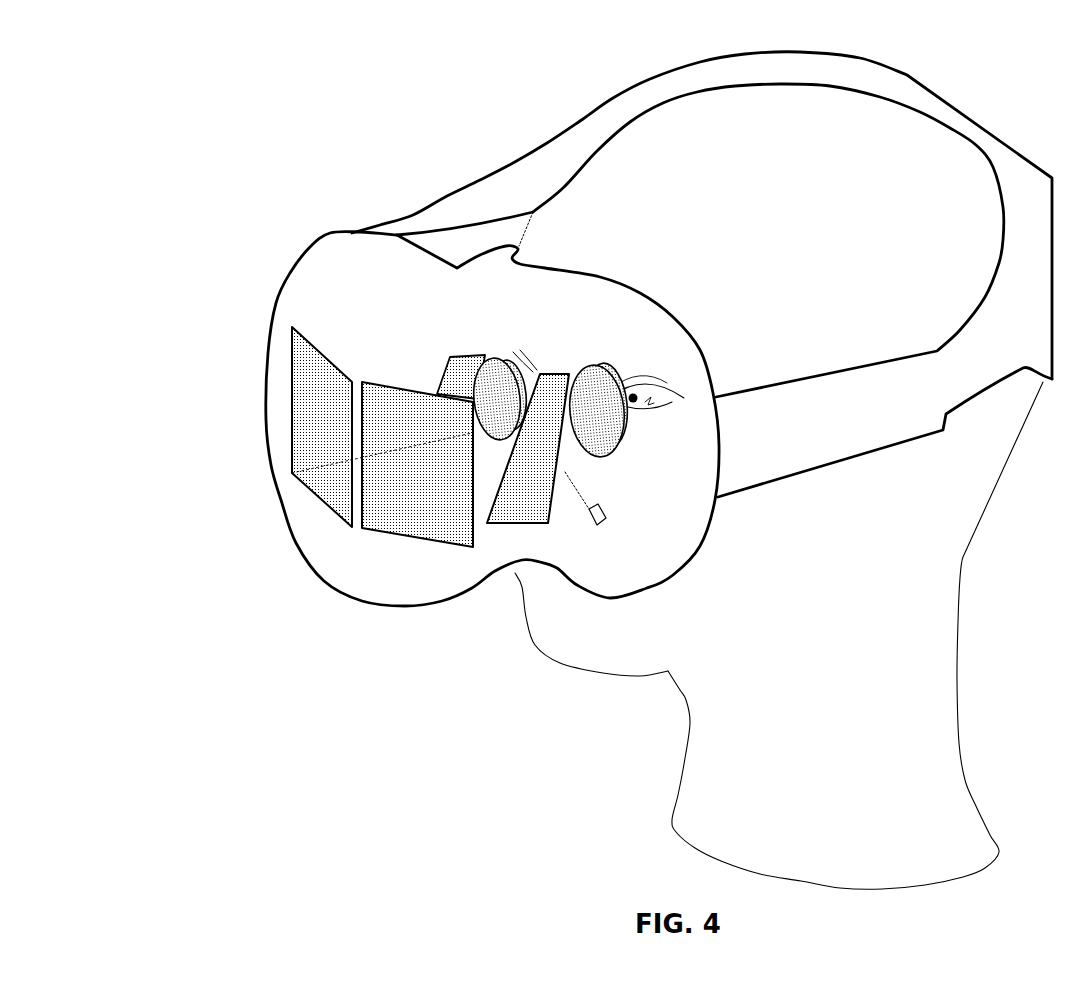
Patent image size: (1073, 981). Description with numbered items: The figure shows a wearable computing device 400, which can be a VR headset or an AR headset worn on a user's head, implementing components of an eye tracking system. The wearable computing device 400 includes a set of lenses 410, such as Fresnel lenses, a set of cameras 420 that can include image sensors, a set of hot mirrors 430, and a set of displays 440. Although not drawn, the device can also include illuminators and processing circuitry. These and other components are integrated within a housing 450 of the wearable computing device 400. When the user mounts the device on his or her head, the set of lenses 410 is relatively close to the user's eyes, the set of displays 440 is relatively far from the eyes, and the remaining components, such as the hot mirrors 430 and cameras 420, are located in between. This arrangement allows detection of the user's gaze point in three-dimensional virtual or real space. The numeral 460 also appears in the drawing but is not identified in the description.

The wearable computing device 400 is at (208, 139).
The set of lenses 410 is at (608, 452).
The set of cameras 420 is at (602, 524).
The set of hot mirrors 430 is at (552, 374).
The set of displays 440 is at (322, 503).
The housing 450 is at (296, 288).
The light path 460 is at (292, 473).